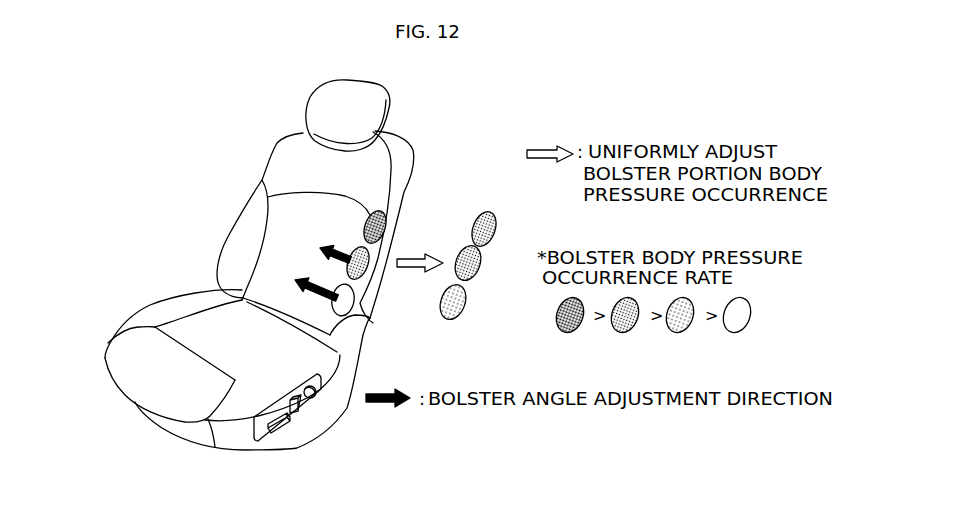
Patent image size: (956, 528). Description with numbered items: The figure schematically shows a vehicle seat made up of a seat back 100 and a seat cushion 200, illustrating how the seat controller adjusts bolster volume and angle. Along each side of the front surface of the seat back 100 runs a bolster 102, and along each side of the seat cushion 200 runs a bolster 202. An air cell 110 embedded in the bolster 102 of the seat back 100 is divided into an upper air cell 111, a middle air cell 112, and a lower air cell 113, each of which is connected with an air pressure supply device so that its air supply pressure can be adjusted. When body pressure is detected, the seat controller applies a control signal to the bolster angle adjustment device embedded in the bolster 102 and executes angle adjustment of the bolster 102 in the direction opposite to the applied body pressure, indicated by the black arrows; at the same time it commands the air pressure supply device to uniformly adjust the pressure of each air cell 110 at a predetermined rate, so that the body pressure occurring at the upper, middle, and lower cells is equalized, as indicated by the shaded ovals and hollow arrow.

The seat back 100 is at (277, 145).
The bolster 102 is at (235, 214).
The air cell 110 is at (414, 230).
The upper air cell 111 is at (363, 212).
The middle air cell 112 is at (372, 258).
The lower air cell 113 is at (360, 300).
The seat cushion 200 is at (118, 363).
The bolster 202 is at (147, 307).